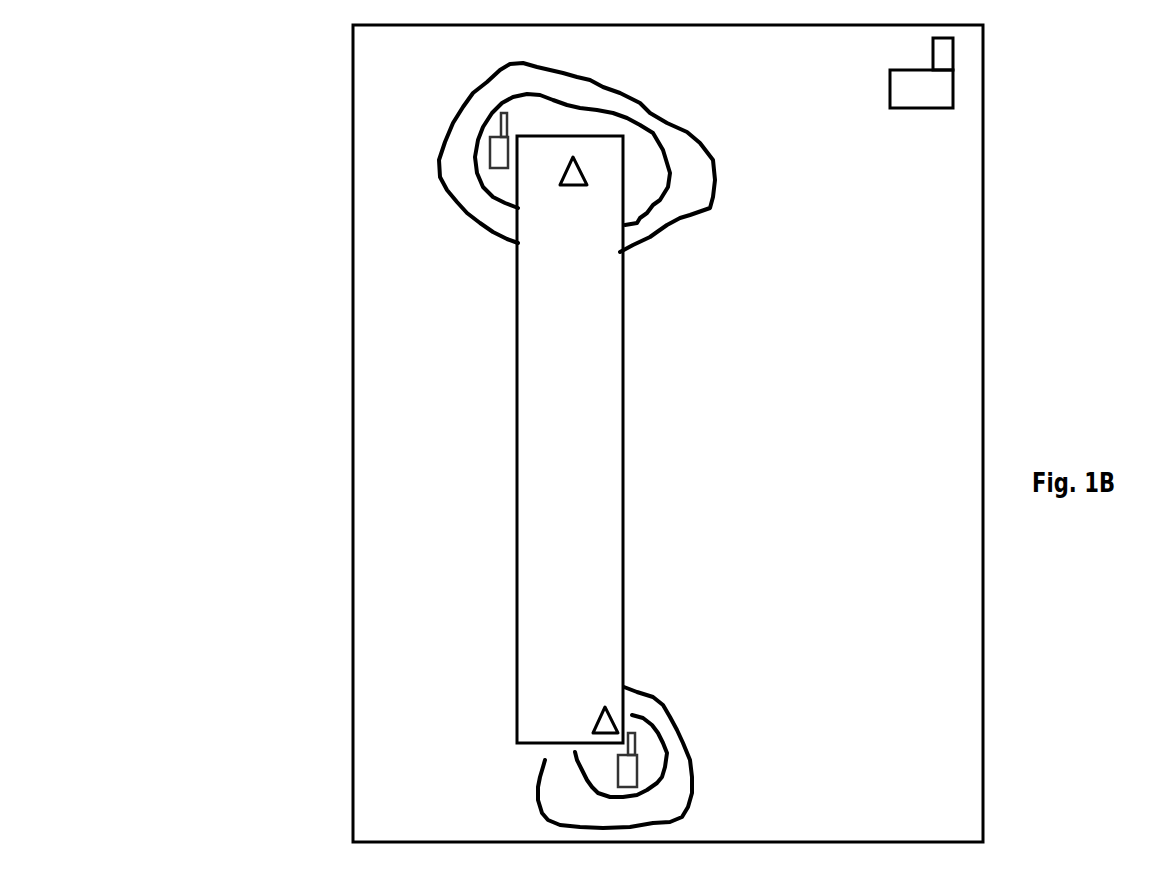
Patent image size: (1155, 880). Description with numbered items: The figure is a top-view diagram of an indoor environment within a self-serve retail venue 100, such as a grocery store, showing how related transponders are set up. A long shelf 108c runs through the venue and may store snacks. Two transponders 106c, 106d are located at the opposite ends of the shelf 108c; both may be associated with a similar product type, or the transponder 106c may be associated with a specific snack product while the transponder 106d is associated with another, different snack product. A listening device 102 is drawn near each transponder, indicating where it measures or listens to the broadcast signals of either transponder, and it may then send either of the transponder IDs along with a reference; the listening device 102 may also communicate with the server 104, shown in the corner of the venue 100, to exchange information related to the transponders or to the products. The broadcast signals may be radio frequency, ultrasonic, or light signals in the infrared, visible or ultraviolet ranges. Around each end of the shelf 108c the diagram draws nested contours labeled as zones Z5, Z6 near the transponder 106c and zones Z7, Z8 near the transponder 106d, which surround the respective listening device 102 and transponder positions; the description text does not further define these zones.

The self-serve retail venue 100 is at (370, 262).
The listening device 102 is at (576, 444).
The server 104 is at (921, 85).
The transponder 106c is at (567, 184).
The transponder 106d is at (579, 720).
The shelf 108c is at (543, 388).
The detection zone Z5 is at (577, 157).
The detection zone Z6 is at (572, 159).
The detection zone Z7 is at (621, 756).
The detection zone Z8 is at (615, 757).